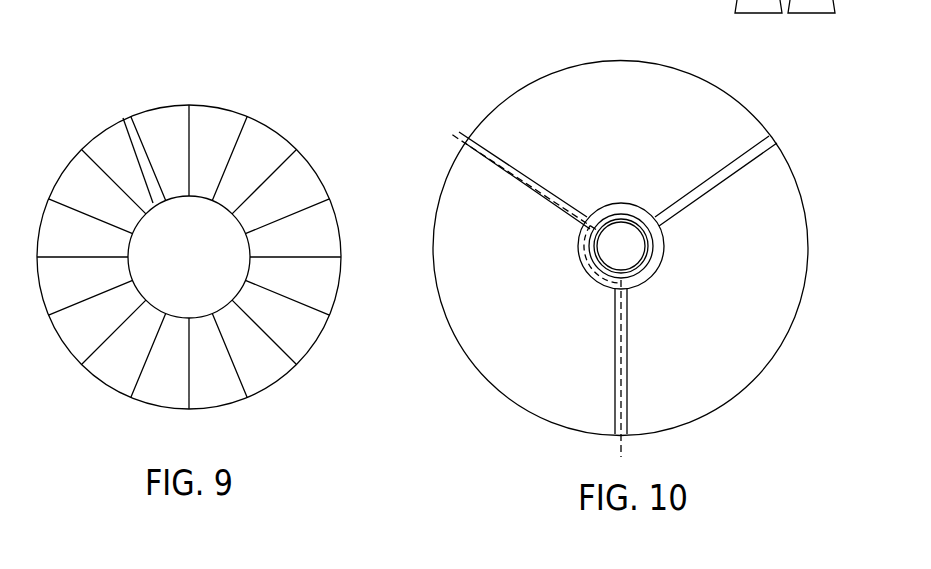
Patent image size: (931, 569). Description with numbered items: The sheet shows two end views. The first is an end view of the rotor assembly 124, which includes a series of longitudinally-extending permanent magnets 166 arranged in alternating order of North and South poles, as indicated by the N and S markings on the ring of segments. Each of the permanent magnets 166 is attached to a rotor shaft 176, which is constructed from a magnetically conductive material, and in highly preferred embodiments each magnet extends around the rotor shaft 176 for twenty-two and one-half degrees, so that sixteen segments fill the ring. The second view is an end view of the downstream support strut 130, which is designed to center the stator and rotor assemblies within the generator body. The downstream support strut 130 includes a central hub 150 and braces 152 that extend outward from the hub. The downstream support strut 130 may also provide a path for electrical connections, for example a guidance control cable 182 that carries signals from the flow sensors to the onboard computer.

In FIG. 9, the rotor assembly 124 is at (327, 135).
In FIG. 9, the permanent magnets 166 is at (177, 142).
In FIG. 9, the rotor shaft 176 is at (158, 242).
In FIG. 10, the downstream support strut 130 is at (772, 410).
In FIG. 10, the central hub 150 is at (664, 250).
In FIG. 10, the braces 152 is at (502, 155).
In FIG. 10, the guidance control cable 182 is at (586, 252).